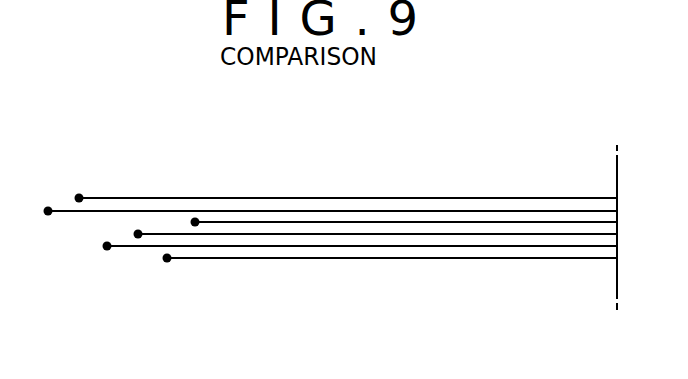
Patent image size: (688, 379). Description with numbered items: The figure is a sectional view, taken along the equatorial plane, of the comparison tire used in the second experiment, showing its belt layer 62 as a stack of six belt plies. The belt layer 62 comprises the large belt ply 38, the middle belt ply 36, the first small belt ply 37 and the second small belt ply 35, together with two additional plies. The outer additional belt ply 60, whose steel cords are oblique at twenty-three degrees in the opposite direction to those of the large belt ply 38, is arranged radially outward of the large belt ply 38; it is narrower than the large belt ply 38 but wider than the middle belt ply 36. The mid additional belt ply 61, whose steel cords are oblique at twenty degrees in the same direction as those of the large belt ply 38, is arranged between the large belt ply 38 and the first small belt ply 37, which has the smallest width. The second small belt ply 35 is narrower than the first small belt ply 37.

The second small belt ply 35 is at (320, 259).
The middle belt ply 36 is at (130, 247).
The first small belt ply 37 is at (424, 234).
The large belt ply 38 is at (84, 212).
The outer additional belt ply 60 is at (370, 197).
The mid additional belt ply 61 is at (540, 222).
The belt layer 62 is at (440, 194).